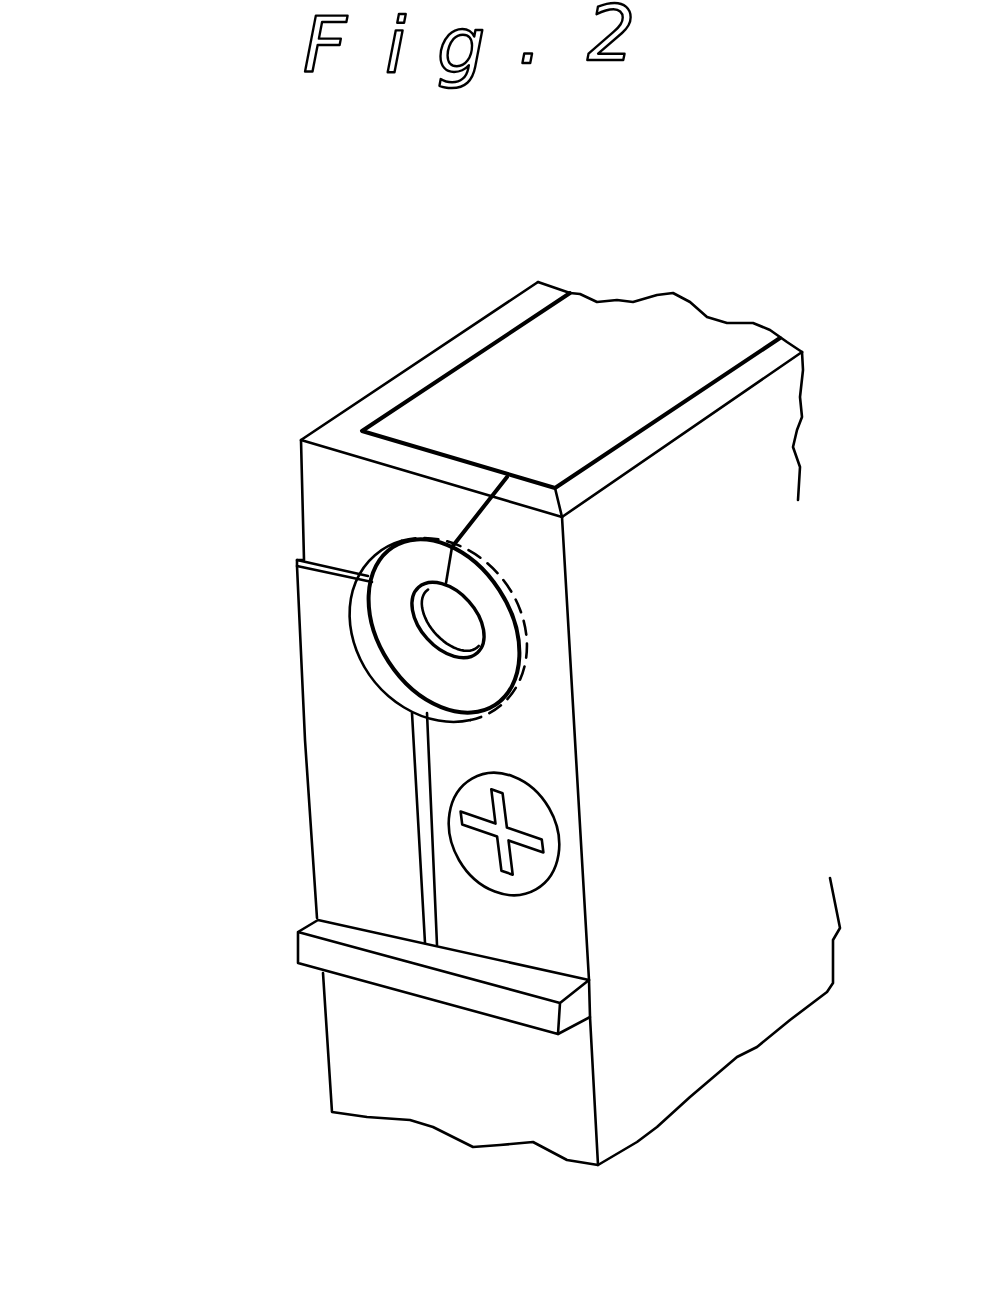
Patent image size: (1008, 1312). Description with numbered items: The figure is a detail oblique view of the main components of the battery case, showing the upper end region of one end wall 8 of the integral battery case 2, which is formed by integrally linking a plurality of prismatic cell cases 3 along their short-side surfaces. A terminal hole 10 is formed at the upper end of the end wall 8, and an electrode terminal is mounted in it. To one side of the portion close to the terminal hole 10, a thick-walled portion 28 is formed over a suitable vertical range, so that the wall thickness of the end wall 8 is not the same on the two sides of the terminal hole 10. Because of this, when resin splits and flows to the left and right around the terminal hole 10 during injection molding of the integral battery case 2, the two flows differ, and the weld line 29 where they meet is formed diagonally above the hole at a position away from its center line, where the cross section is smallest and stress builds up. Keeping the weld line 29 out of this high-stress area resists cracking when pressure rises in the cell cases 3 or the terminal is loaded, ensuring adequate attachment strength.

The integral battery case 2 is at (280, 483).
The prismatic cell case 3 is at (602, 407).
The end wall 8 is at (473, 915).
The terminal hole 10 is at (447, 612).
The thick-walled portion 28 is at (362, 806).
The weld line 29 is at (432, 583).